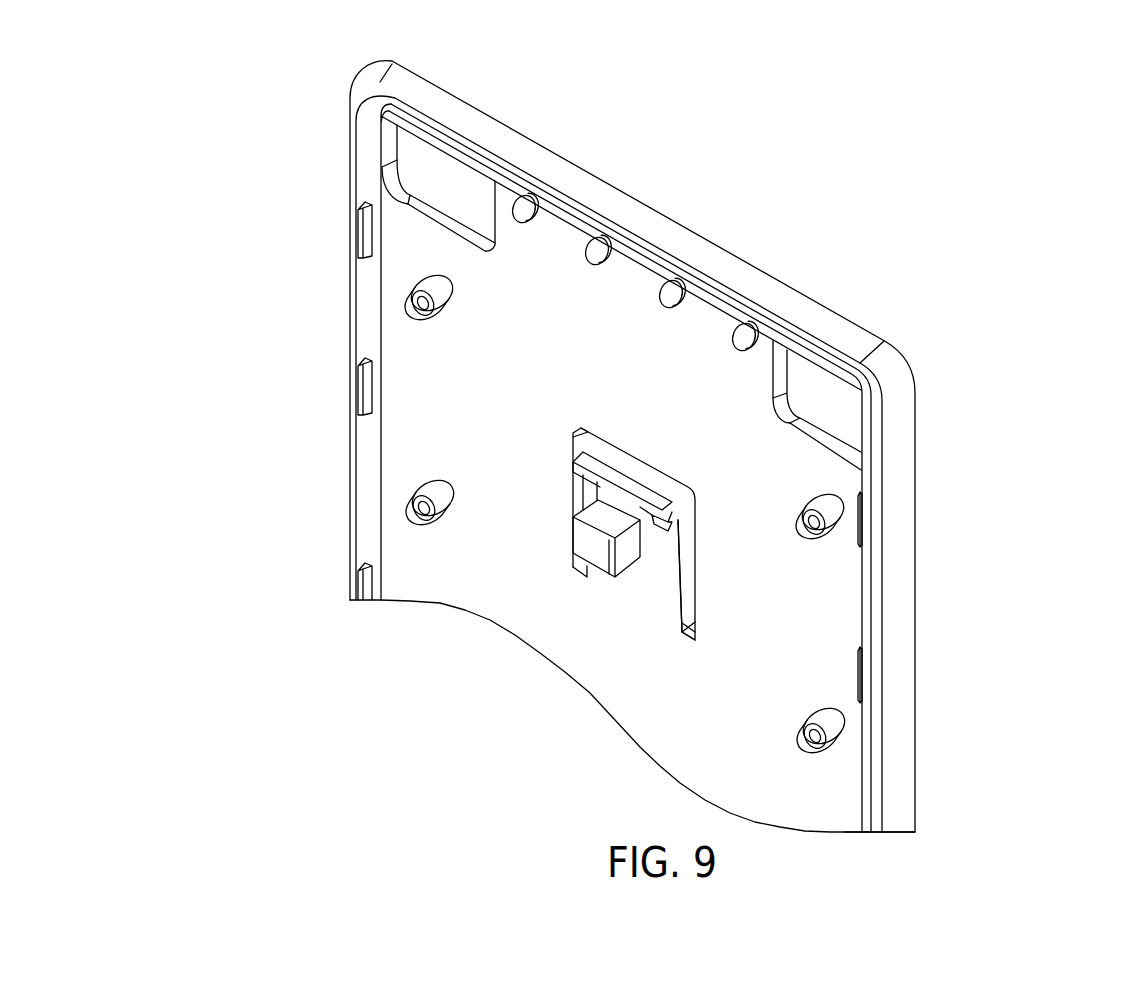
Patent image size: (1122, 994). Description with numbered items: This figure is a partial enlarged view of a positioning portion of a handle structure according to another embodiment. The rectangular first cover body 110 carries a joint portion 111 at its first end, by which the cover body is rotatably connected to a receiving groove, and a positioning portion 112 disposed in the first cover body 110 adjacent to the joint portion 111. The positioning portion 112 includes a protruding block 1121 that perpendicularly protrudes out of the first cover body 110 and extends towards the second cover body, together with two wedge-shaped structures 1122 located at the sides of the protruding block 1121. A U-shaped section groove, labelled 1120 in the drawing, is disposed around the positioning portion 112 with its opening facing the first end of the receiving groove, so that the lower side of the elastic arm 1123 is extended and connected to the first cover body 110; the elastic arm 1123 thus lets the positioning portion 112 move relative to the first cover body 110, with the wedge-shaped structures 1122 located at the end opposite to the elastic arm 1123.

The first cover body 110 is at (327, 304).
The joint portion 111 is at (633, 273).
The positioning portion 112 is at (840, 587).
The base plate of latch 1120 is at (673, 496).
The protruding block 1121 is at (618, 557).
The wedge-shaped structure 1122 is at (670, 526).
The elastic arm 1123 is at (647, 607).